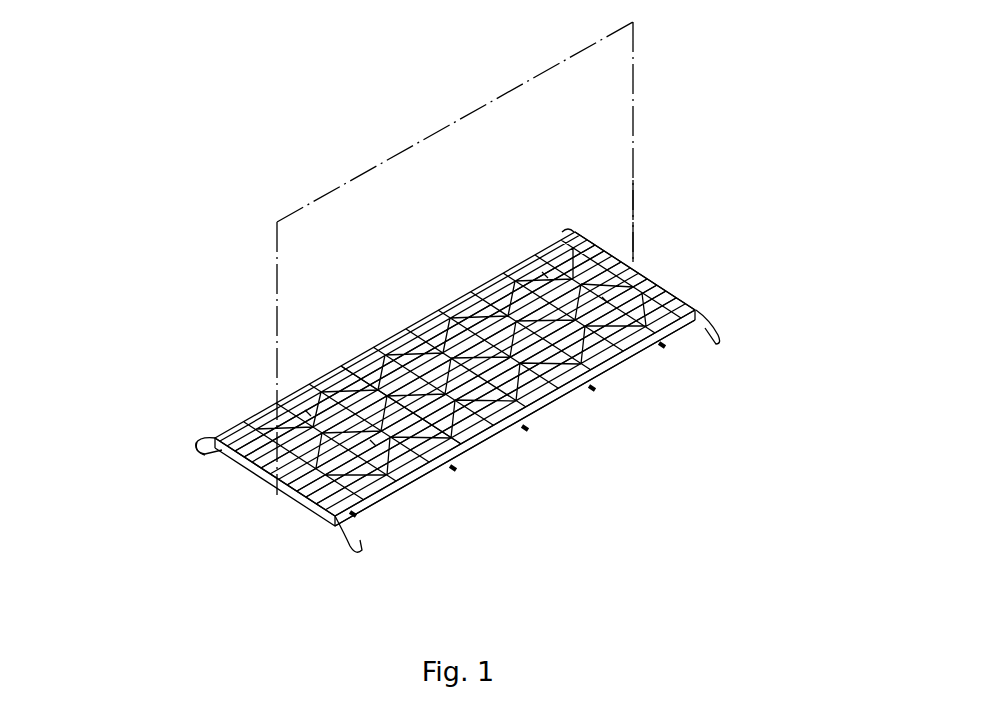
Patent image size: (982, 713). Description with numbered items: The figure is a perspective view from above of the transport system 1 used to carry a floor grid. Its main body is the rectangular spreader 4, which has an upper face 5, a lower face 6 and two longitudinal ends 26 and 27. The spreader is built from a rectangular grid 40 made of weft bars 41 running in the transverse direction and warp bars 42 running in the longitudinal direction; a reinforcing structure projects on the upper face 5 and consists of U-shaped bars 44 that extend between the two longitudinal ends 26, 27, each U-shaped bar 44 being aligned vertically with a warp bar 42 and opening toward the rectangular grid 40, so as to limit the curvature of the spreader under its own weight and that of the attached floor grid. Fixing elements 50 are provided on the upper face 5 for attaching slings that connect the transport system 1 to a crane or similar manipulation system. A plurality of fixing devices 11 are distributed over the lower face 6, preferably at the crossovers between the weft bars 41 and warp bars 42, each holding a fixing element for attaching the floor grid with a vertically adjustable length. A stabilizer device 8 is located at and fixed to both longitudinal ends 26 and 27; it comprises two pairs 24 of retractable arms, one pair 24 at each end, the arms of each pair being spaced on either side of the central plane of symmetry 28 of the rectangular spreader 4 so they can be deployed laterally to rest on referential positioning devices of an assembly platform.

The transport system 1 is at (626, 431).
The rectangular spreader 4 is at (435, 310).
The upper face 5 is at (358, 360).
The lower face 6 is at (438, 485).
The stabilizer device 8 is at (200, 440).
The fixing devices 11 is at (355, 516).
The pairs of retractable arms 24 is at (657, 266).
The longitudinal end 26 is at (641, 230).
The longitudinal end 27 is at (197, 474).
The central plane of symmetry 28 is at (458, 117).
The rectangular grid 40 is at (475, 295).
The weft bars 41 is at (530, 385).
The warp bars 42 is at (555, 383).
The U-shaped bars 44 is at (412, 325).
The fixing elements 50 is at (308, 413).